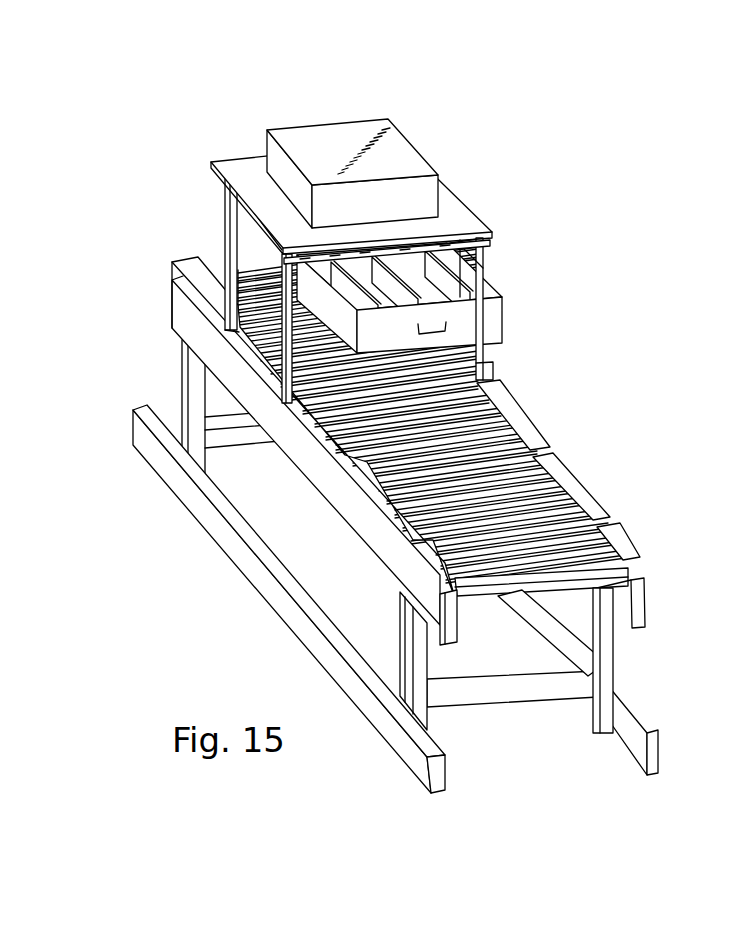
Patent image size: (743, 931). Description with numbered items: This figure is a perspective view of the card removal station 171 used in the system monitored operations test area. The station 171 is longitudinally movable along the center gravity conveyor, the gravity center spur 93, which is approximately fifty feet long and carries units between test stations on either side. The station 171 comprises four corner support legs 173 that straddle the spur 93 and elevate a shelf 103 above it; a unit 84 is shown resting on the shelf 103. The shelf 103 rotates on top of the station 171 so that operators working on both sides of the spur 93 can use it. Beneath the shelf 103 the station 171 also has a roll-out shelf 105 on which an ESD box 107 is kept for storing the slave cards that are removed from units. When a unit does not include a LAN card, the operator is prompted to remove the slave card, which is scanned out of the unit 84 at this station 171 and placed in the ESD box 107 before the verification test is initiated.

The unit 84 is at (327, 150).
The gravity center spur 93 is at (553, 404).
The shelf 103 is at (242, 165).
The roll-out shelf 105 is at (263, 231).
The ESD box 107 is at (470, 285).
The card removal station 171 is at (332, 240).
The corner support legs 173 is at (224, 199).